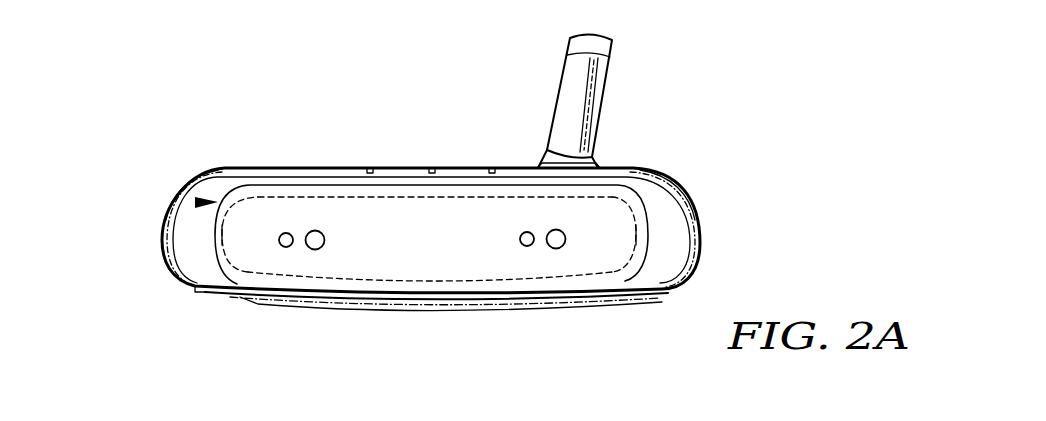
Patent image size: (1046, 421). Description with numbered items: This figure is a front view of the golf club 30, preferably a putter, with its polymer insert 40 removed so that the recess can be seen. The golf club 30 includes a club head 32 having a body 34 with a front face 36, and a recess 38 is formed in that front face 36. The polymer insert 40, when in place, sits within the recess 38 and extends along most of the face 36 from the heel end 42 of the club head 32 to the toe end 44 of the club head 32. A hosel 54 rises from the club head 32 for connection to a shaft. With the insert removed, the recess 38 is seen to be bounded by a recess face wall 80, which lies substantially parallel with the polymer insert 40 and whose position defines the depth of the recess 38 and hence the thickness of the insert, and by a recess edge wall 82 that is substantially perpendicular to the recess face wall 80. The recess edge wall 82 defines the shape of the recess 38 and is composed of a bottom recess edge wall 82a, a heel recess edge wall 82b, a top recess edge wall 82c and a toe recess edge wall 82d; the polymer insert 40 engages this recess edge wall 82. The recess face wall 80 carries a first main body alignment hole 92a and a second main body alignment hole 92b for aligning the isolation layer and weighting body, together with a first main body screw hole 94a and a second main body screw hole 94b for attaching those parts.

The golf club 30 is at (329, 112).
The club head 32 is at (156, 287).
The body 34 is at (207, 173).
The front face 36 is at (662, 252).
The recess 38 is at (533, 263).
The polymer insert 40 is at (600, 205).
The heel end 42 is at (673, 183).
The toe end 44 is at (167, 212).
The hosel 54 is at (605, 98).
The recess face wall 80 is at (240, 258).
The recess edge wall 82 is at (293, 273).
The bottom recess edge wall 82a is at (483, 280).
The heel recess edge wall 82b is at (637, 232).
The top recess edge wall 82c is at (405, 197).
The toe recess edge wall 82d is at (227, 230).
The first main body alignment hole 92a is at (287, 232).
The second main body alignment hole 92b is at (519, 239).
The first main body screw hole 94a is at (325, 238).
The second main body screw hole 94b is at (550, 231).